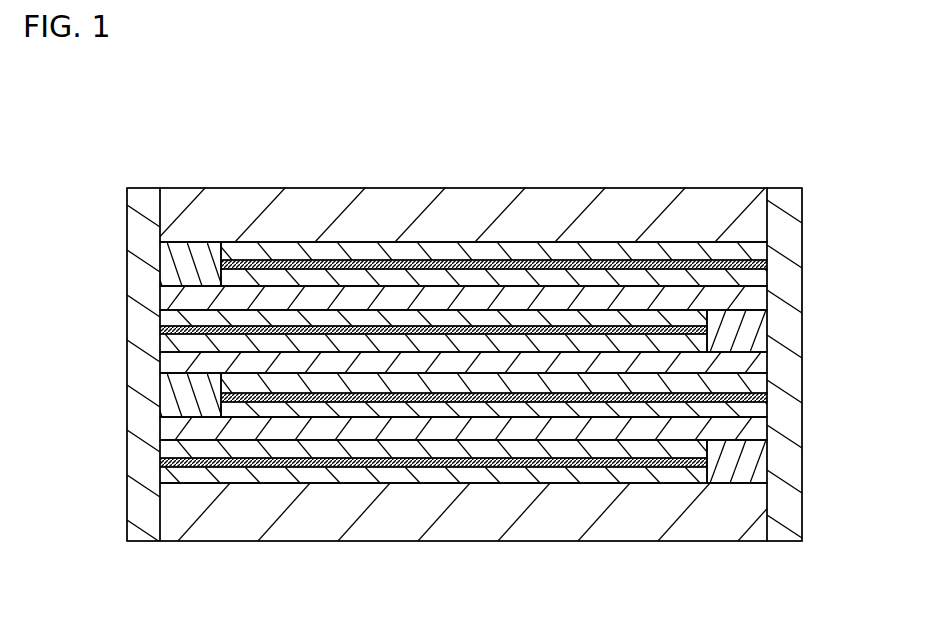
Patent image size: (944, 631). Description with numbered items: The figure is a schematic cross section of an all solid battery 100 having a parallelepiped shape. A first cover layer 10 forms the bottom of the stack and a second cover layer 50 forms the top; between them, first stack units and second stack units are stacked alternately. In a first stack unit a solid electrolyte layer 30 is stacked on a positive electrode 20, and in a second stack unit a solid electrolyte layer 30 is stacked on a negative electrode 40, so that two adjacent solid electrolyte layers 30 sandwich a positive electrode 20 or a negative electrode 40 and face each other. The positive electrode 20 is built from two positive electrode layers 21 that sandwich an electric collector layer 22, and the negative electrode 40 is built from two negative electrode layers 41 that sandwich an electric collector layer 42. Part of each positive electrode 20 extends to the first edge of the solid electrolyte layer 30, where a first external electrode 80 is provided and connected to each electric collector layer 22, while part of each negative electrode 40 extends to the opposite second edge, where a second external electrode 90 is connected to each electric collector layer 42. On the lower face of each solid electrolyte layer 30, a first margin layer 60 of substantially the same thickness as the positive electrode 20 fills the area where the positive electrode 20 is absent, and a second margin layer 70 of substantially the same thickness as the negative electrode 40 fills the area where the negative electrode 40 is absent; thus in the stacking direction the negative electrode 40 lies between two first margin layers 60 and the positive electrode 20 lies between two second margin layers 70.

The all solid battery 100 is at (850, 152).
The first cover layer 10 is at (387, 530).
The second cover layer 50 is at (323, 202).
The first external electrode 80 is at (137, 223).
The second external electrode 90 is at (788, 243).
The positive electrode 20 is at (367, 412).
The positive electrode layer 21 is at (162, 448).
The electric collector layer 22 is at (162, 463).
The solid electrolyte layer 30 is at (162, 362).
The negative electrode 40 is at (564, 345).
The negative electrode layer 41 is at (755, 383).
The electric collector layer 42 is at (757, 399).
The first margin layer 60 is at (758, 332).
The second margin layer 70 is at (163, 276).